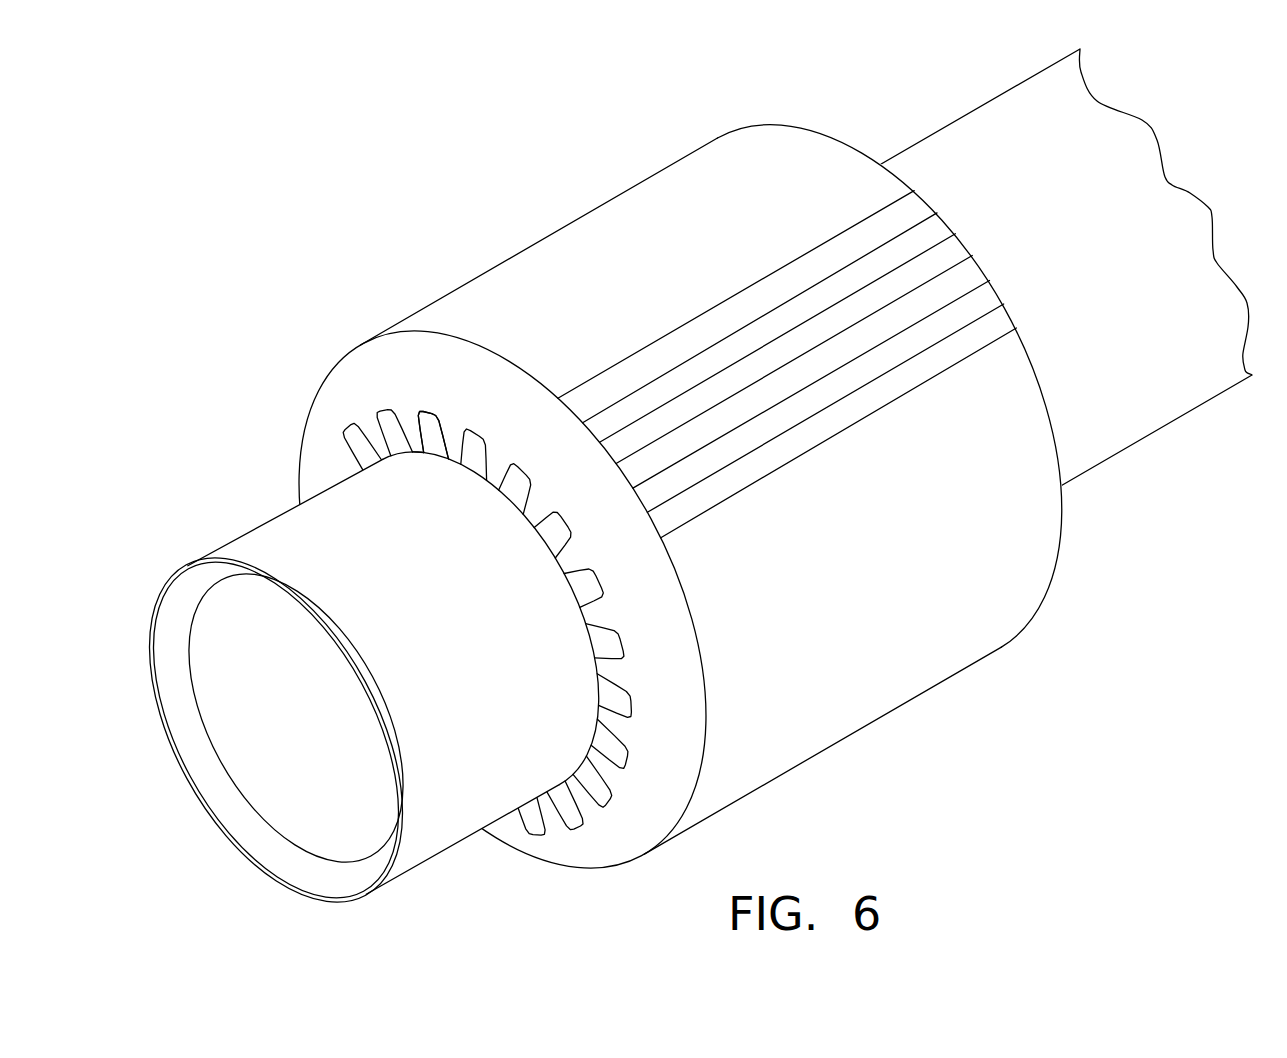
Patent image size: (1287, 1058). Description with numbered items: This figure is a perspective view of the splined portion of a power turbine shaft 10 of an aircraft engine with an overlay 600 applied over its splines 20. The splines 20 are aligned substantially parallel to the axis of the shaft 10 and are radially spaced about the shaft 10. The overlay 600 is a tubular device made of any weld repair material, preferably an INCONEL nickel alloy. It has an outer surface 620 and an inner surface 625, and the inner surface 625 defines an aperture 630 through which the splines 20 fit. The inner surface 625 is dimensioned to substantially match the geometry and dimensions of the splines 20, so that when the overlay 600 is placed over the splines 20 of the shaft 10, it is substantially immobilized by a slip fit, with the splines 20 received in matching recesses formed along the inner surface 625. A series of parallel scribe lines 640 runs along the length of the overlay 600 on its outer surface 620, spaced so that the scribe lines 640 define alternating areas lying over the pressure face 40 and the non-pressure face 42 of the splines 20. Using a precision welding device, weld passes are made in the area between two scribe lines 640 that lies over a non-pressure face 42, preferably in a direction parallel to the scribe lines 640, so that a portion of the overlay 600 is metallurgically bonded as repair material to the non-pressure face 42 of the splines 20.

The power turbine shaft 10 is at (1075, 226).
The splines 20 is at (528, 803).
The pressure face 40 is at (487, 603).
The non-pressure face 42 is at (562, 536).
The overlay 600 is at (681, 496).
The outer surface 620 is at (865, 693).
The inner surface 625 is at (390, 428).
The aperture 630 is at (428, 432).
The scribe lines 640 is at (782, 267).